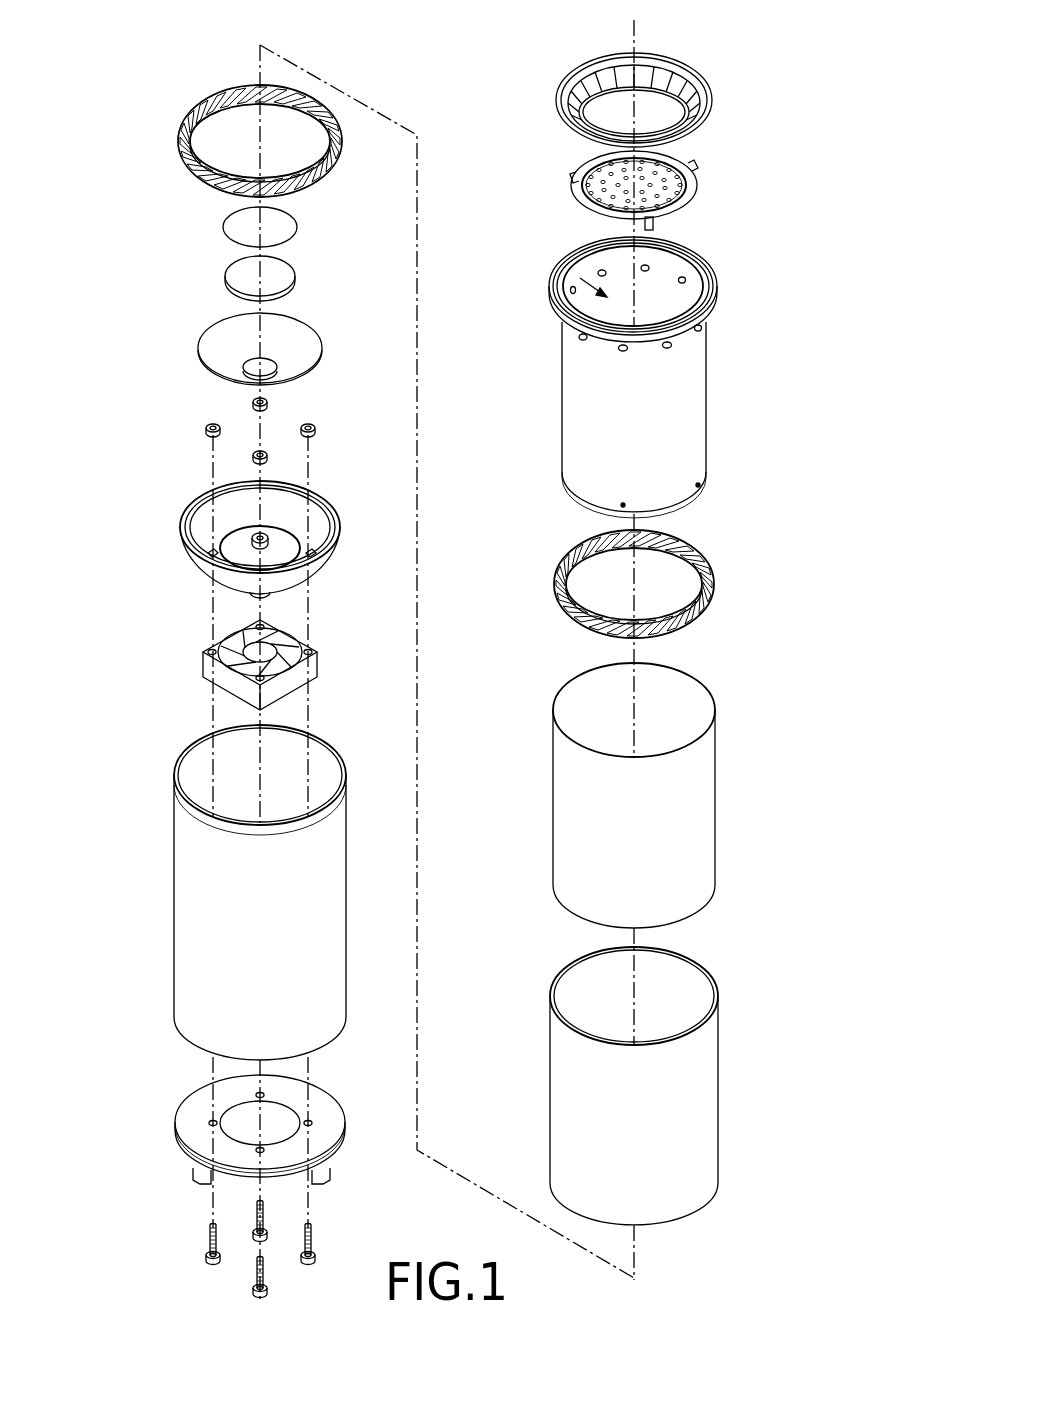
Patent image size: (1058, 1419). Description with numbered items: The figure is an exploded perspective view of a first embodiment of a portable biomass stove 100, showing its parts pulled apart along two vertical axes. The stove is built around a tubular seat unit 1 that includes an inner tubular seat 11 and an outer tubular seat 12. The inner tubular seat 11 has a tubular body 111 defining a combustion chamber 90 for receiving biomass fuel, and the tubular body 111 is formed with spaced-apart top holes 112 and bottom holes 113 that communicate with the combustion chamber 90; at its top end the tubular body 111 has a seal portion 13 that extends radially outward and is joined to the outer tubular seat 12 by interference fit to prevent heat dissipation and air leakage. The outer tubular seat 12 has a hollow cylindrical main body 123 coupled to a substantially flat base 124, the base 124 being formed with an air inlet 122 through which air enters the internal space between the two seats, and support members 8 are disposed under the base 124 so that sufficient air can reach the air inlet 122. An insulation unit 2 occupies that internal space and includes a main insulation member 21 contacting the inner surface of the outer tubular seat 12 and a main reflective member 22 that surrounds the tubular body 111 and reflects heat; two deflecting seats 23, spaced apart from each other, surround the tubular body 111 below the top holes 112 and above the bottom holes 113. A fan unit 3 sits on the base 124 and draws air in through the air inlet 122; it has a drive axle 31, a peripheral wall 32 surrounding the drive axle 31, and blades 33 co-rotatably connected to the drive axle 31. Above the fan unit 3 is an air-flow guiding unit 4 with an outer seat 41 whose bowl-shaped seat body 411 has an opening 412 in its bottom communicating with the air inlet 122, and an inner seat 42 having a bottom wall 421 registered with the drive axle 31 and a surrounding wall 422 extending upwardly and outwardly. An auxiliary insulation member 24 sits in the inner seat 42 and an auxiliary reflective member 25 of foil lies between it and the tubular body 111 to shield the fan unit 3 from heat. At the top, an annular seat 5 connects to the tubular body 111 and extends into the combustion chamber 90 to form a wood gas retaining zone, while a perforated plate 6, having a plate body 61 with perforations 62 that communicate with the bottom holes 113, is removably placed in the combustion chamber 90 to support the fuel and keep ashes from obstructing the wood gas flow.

The portable biomass stove 100 is at (444, 657).
The tubular seat unit 1 is at (225, 1011).
The insulation unit 2 is at (685, 944).
The fan unit 3 is at (238, 662).
The air-flow guiding unit 4 is at (185, 524).
The annular seat 5 is at (728, 93).
The perforated plate 6 is at (682, 174).
The plate body 61 is at (634, 185).
The perforations 62 is at (633, 177).
The support members 8 is at (198, 1178).
The inner tubular seat 11 is at (660, 401).
The tubular body 111 is at (634, 420).
The top holes 112 is at (705, 332).
The bottom holes 113 is at (700, 486).
The outer tubular seat 12 is at (185, 910).
The seal portion 13 is at (705, 267).
The main insulation member 21 is at (705, 1108).
The main reflective member 22 is at (703, 843).
The deflecting seats 23 is at (184, 106).
The auxiliary insulation member 24 is at (225, 279).
The auxiliary reflective member 25 is at (228, 226).
The drive axle 31 is at (215, 682).
The peripheral wall 32 is at (208, 658).
The blades 33 is at (298, 636).
The outer seat 41 is at (185, 539).
The seat body 411 is at (205, 572).
The opening 412 is at (225, 527).
The inner seat 42 is at (189, 349).
The bottom wall 421 is at (245, 360).
The surrounding wall 422 is at (213, 331).
The combustion chamber 90 is at (560, 272).
The air inlet 122 is at (230, 1106).
The main body 123 is at (185, 842).
The base 124 is at (187, 1130).